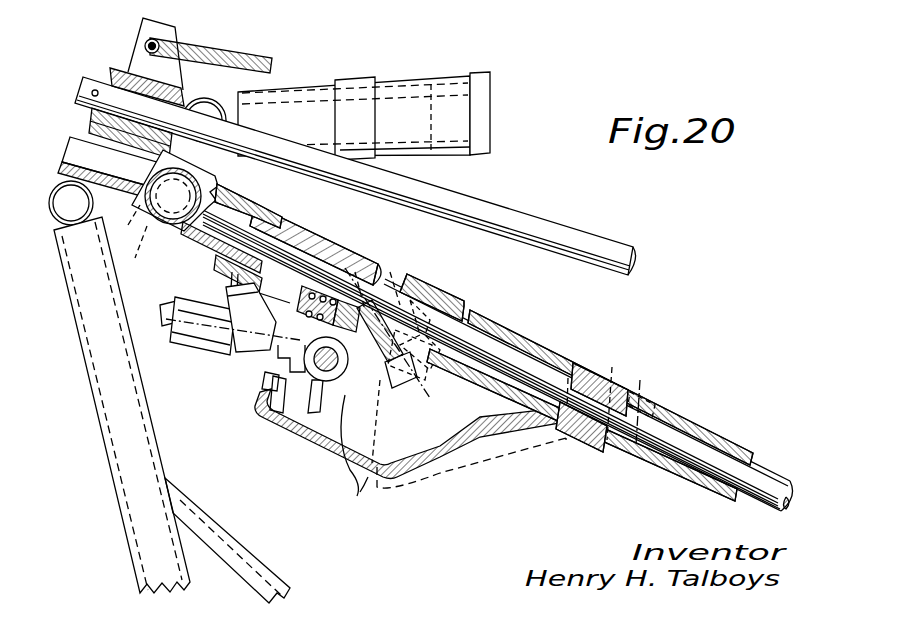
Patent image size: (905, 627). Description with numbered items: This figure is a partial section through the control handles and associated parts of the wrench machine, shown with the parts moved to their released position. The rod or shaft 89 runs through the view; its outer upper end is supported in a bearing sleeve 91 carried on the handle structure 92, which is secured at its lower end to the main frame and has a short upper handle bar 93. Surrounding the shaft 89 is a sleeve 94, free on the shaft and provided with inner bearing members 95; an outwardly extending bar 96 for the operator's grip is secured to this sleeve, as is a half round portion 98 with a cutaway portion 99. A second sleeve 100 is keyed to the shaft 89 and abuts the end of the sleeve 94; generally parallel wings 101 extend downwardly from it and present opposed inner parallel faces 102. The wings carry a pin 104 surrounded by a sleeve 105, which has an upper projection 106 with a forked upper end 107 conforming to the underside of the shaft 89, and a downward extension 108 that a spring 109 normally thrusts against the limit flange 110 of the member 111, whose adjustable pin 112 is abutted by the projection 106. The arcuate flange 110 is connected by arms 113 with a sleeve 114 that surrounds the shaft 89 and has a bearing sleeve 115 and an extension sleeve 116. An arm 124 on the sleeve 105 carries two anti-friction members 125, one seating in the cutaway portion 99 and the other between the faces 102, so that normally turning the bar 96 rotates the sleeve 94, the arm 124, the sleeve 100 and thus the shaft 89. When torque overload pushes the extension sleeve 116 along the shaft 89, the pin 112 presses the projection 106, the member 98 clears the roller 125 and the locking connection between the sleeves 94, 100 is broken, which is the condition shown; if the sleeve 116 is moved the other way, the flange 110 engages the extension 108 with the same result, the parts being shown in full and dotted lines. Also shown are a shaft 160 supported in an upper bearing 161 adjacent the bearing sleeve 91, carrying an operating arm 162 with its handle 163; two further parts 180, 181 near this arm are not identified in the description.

The shaft 89 is at (80, 146).
The bearing sleeve 91 is at (128, 214).
The handle structure 92 is at (90, 364).
The short upper handle bar 93 is at (57, 190).
The sleeve 94 is at (195, 236).
The inner bearing members 95 is at (258, 212).
The outwardly extending bar 96 is at (192, 178).
The half round portion 98 is at (222, 262).
The cutaway portion 99 is at (243, 280).
The second sleeve 100 is at (328, 240).
The wings 101 is at (253, 281).
The opposed inner parallel faces 102 is at (265, 316).
The pin 104 is at (376, 386).
The sleeve 105 is at (338, 358).
The upper projection 106 is at (387, 288).
The forked upper end 107 is at (373, 264).
The downward extension 108 is at (305, 441).
The spring 109 is at (300, 312).
The limit flange 110 is at (262, 386).
The member 111 is at (383, 431).
The adjustable pin 112 is at (408, 268).
The arms 113 is at (268, 422).
The sleeve 114 is at (518, 340).
The bearing sleeve 115 is at (448, 296).
The extension sleeve 116 is at (677, 463).
The arm 124 is at (273, 368).
The anti-friction members 125 is at (185, 346).
The shaft 160 is at (83, 79).
The upper bearing 161 is at (116, 68).
The operating arm 162 is at (203, 100).
The handle 163 is at (432, 84).
The rod 180 is at (184, 55).
The eye 181 is at (149, 42).